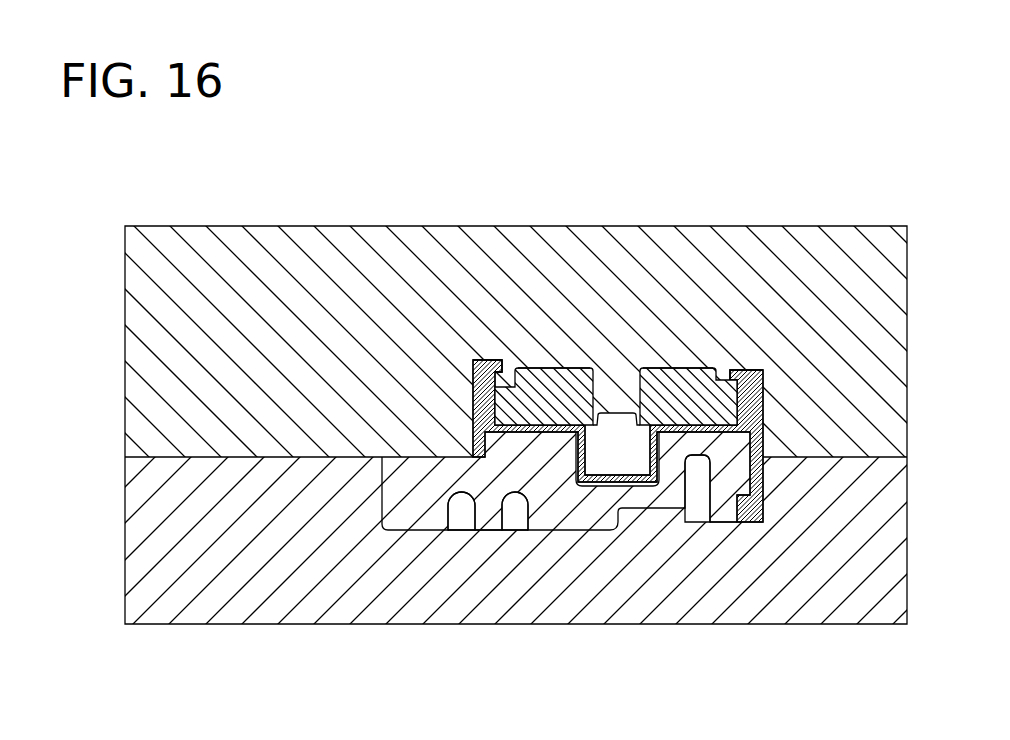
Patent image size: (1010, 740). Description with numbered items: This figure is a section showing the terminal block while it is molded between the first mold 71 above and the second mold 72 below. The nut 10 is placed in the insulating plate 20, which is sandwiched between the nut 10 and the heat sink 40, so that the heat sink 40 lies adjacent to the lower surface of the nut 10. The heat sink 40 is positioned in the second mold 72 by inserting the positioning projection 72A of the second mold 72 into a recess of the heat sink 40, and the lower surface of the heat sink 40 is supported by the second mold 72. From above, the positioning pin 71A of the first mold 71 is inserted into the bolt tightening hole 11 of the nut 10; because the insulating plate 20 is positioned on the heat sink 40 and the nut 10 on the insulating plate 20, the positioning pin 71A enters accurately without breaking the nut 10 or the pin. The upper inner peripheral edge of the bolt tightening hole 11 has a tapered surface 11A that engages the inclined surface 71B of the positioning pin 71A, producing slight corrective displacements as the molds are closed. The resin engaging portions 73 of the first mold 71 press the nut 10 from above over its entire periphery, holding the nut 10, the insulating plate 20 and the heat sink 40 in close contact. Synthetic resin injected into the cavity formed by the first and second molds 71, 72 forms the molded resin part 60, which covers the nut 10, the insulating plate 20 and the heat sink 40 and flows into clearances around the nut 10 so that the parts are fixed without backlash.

The nut 10 is at (614, 407).
The bolt tightening hole 11 is at (604, 399).
The tapered surface 11A is at (640, 405).
The insulating plate 20 is at (610, 486).
The heat sink 40 is at (722, 525).
The molded resin part 60 is at (640, 436).
The first mold 71 is at (900, 323).
The positioning pin 71A is at (627, 405).
The inclined surface 71B is at (589, 368).
The second mold 72 is at (505, 454).
The positioning projection 72A is at (457, 503).
The resin engaging portion 73 is at (506, 373).